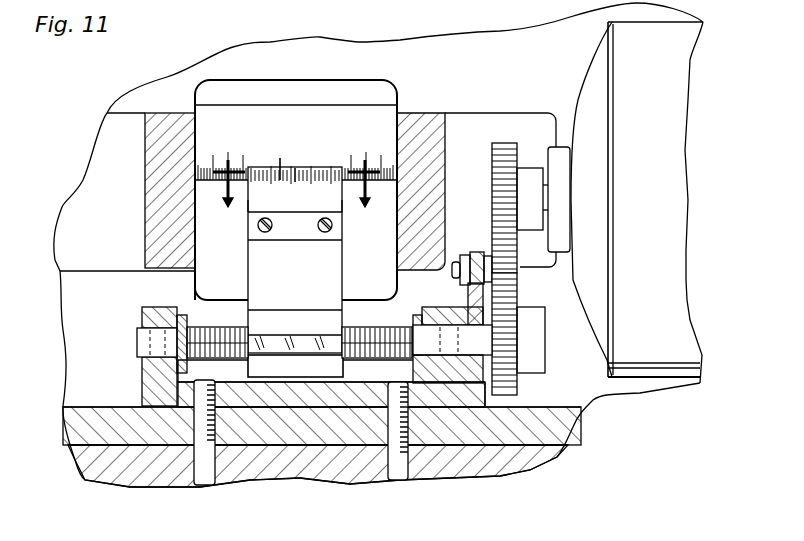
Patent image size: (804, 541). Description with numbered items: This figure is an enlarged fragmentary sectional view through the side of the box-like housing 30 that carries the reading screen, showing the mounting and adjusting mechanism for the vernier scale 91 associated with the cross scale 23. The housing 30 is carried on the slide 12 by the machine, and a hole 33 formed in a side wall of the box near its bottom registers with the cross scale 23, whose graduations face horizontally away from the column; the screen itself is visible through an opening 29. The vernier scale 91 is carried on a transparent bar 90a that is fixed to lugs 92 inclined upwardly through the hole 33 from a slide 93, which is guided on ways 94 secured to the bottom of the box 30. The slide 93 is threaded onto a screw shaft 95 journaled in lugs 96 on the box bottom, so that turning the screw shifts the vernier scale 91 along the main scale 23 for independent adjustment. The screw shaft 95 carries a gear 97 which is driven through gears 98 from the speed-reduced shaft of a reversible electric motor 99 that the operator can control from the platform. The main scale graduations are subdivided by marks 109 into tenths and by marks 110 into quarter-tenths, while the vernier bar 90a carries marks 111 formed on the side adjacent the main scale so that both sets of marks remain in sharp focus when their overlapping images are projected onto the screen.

The box-like housing 30 is at (410, 43).
The cross scale 23 is at (378, 112).
The hole 33 is at (333, 72).
The opening 29 is at (296, 150).
The slide 12 is at (296, 184).
The lugs 92 is at (250, 256).
The marks 109 is at (311, 164).
The marks 110 is at (280, 152).
The marks 111 is at (295, 184).
The vernier scale 91 is at (250, 206).
The bar 90a is at (340, 206).
The ways 94 is at (266, 346).
The slide 93 is at (345, 373).
The screw shaft 95 is at (213, 340).
The lugs 96 is at (145, 313).
The gears 98 is at (493, 262).
The gear 97 is at (518, 385).
The reversible electric motor 99 is at (598, 57).